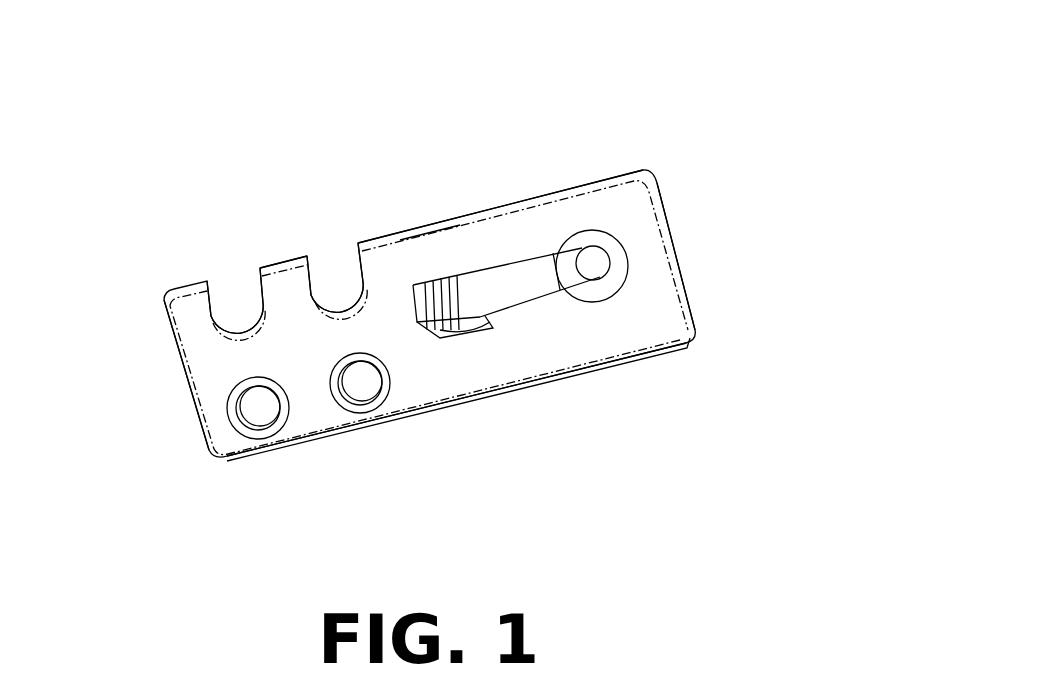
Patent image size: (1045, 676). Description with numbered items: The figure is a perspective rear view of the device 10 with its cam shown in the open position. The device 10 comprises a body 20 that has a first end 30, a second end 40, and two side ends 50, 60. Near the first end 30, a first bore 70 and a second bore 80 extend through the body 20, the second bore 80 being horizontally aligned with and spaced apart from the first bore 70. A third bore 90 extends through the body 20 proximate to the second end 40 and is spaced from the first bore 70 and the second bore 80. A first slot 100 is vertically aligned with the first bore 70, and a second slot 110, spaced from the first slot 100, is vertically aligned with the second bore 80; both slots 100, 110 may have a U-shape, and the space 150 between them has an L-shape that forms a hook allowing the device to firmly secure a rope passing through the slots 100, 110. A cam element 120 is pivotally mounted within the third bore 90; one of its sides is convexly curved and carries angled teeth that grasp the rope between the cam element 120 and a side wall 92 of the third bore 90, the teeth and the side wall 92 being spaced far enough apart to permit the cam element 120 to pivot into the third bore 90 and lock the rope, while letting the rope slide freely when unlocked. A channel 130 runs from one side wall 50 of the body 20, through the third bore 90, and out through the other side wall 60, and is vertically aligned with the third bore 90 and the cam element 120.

The device 10 is at (535, 315).
The body 20 is at (730, 343).
The first end 30 is at (137, 375).
The second end 40 is at (763, 207).
The side end 50 is at (523, 133).
The side end 60 is at (494, 433).
The first bore 70 is at (439, 406).
The second bore 80 is at (334, 450).
The third bore 90 is at (664, 255).
The side wall of the third bore 92 is at (665, 257).
The first slot 100 is at (253, 178).
The second slot 110 is at (151, 216).
The cam element 120 is at (573, 339).
The channel 130 is at (356, 123).
The space 150 is at (192, 180).